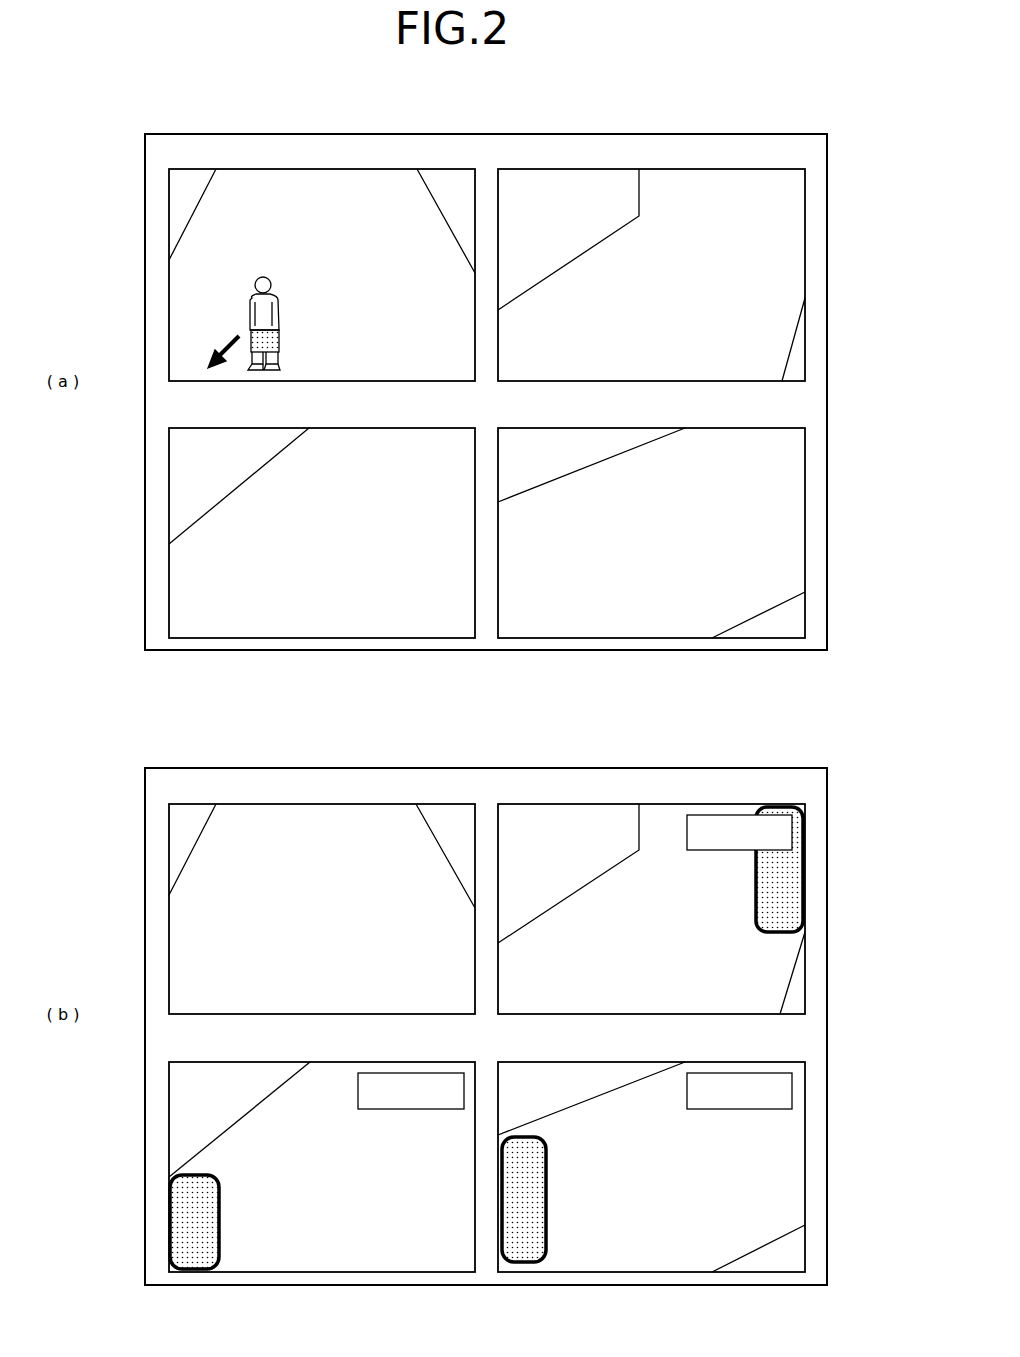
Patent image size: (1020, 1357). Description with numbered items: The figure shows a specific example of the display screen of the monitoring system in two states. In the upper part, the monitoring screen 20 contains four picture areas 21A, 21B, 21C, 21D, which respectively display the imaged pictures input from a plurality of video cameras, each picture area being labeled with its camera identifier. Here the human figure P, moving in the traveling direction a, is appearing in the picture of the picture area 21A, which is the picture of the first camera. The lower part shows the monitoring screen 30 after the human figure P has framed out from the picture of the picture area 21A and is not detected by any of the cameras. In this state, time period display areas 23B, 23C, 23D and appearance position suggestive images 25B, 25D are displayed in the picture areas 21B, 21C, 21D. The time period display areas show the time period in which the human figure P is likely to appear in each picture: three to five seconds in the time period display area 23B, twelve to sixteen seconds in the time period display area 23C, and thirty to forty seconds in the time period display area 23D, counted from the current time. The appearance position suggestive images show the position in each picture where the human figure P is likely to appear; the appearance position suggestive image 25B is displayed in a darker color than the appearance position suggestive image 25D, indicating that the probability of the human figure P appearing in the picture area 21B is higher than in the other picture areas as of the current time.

The monitoring screen 20 is at (765, 134).
The picture area 21A is at (293, 552).
The picture area 21B is at (650, 169).
The picture area 21C is at (321, 638).
The picture area 21D is at (650, 638).
The monitoring screen (search result) 30 is at (765, 768).
The time period display area 23B is at (705, 815).
The time period display area 23C is at (405, 1073).
The time period display area 23D is at (792, 1088).
The appearance position suggestive image 25B is at (803, 882).
The appearance position suggestive image 25D is at (193, 1269).
The human figure P is at (245, 288).